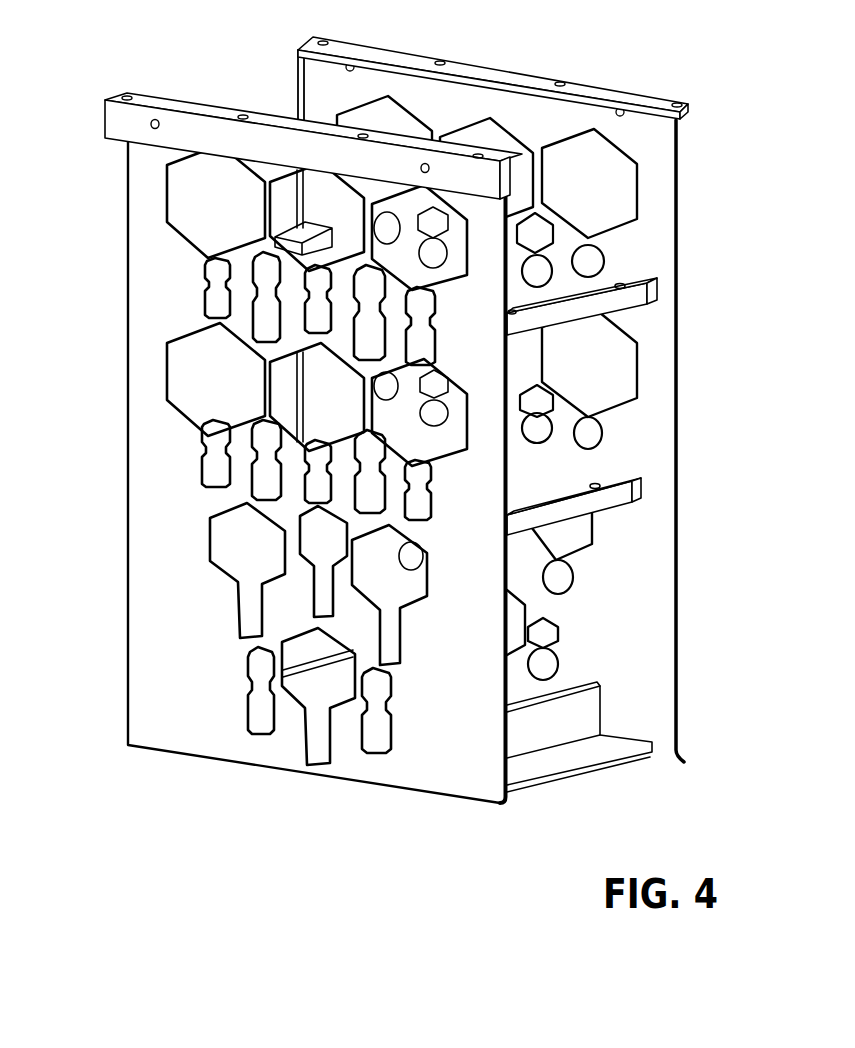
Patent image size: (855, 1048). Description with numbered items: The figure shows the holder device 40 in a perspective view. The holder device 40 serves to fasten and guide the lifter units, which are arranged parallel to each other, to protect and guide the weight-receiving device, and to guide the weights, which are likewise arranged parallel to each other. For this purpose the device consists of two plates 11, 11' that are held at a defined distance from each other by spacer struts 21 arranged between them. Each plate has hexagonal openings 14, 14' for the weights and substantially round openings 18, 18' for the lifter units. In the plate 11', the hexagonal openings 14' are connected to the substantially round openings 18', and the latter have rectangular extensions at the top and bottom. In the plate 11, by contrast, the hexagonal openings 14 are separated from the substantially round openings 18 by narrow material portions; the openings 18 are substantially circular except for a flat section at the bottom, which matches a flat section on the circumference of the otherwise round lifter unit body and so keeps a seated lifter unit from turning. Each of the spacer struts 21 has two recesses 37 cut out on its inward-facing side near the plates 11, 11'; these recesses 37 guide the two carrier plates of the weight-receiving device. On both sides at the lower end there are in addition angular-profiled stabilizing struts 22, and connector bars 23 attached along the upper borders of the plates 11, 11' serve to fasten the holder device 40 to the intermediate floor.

The plate 11 is at (509, 437).
The plate 11' is at (317, 480).
The hexagonal openings 14 is at (542, 413).
The hexagonal openings 14' is at (254, 455).
The substantially round openings 18 is at (632, 446).
The substantially round openings 18' is at (238, 553).
The spacer struts 21 is at (647, 290).
The stabilizing struts 22 is at (578, 750).
The connector bars 23 is at (190, 107).
The recesses 37 is at (621, 284).
The holder device 40 is at (165, 836).